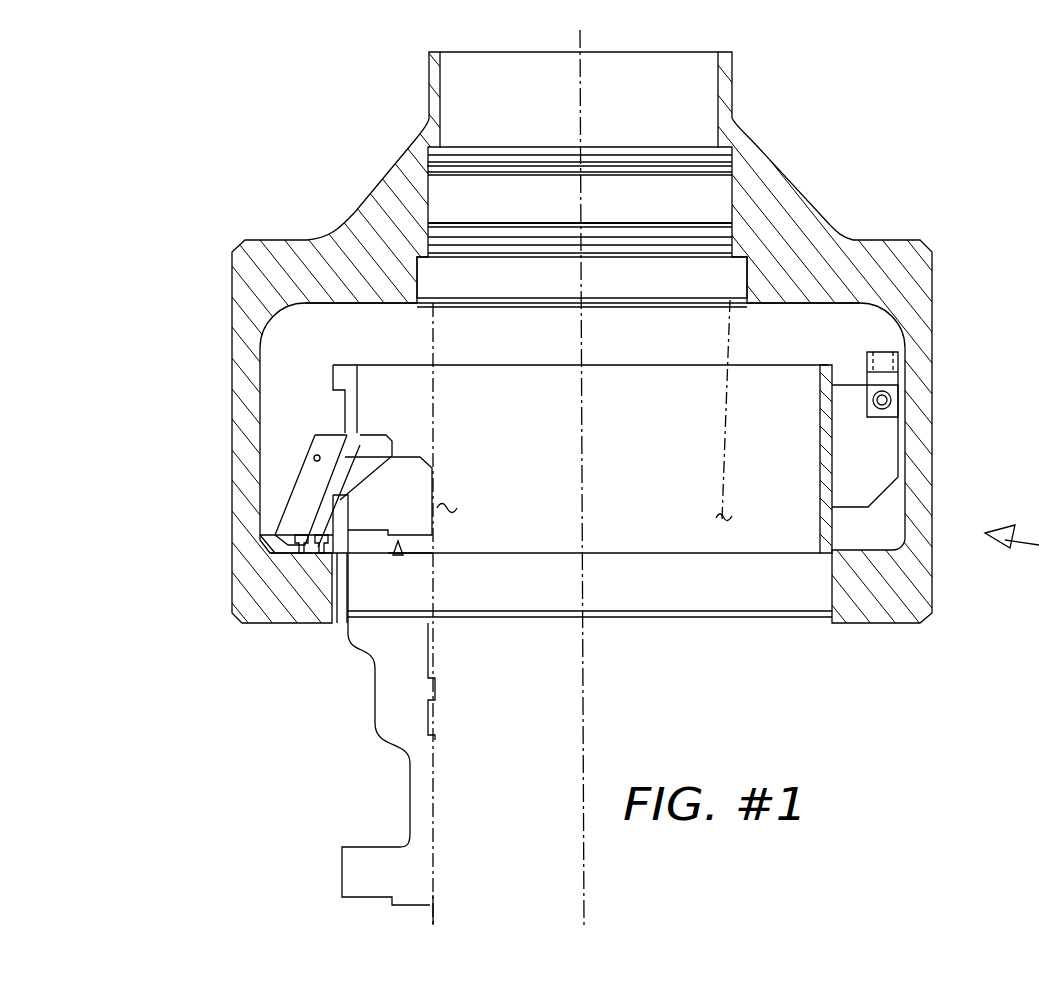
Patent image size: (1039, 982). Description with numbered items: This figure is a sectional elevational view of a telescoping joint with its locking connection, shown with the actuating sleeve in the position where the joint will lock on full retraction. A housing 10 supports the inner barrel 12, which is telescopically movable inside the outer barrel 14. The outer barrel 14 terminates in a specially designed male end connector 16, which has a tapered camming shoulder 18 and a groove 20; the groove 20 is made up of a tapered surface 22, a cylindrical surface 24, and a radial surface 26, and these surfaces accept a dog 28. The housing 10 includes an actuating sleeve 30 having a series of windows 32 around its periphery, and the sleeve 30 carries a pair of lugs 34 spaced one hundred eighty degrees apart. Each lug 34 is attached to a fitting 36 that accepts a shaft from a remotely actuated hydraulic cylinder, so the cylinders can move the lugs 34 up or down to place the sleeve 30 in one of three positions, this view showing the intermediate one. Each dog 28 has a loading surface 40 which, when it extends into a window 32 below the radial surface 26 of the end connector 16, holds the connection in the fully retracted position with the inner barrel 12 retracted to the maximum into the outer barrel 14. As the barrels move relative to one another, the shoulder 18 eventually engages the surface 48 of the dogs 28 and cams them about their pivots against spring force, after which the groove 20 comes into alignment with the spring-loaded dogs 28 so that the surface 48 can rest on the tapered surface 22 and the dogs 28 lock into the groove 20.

The housing 10 is at (932, 283).
The inner barrel 12 is at (728, 380).
The outer barrel 14 is at (435, 903).
The male end connector 16 is at (377, 698).
The tapered camming shoulder 18 is at (362, 465).
The groove 20 is at (405, 547).
The tapered surface 22 is at (380, 595).
The cylindrical surface 24 is at (395, 552).
The radial surface 26 is at (362, 535).
The dog 28 is at (312, 507).
The actuating sleeve 30 is at (800, 357).
The window 32 is at (350, 405).
The lug 34 is at (882, 458).
The fitting 36 is at (905, 377).
The loading surface 40 is at (360, 430).
The surface 48 is at (383, 463).